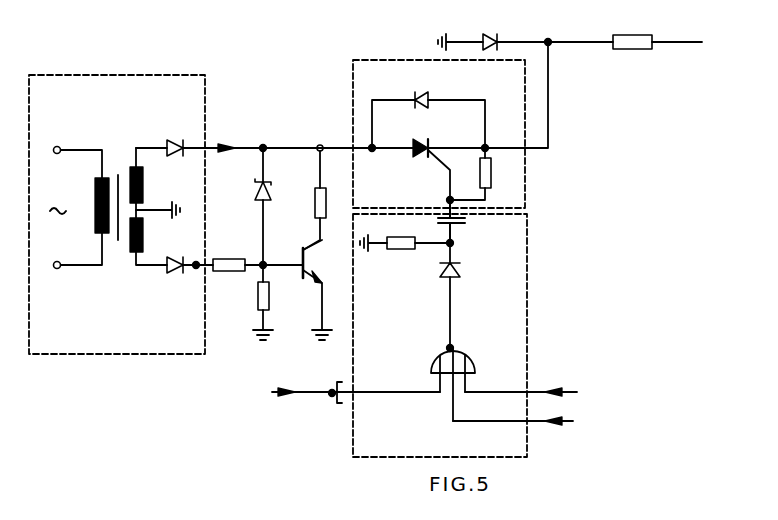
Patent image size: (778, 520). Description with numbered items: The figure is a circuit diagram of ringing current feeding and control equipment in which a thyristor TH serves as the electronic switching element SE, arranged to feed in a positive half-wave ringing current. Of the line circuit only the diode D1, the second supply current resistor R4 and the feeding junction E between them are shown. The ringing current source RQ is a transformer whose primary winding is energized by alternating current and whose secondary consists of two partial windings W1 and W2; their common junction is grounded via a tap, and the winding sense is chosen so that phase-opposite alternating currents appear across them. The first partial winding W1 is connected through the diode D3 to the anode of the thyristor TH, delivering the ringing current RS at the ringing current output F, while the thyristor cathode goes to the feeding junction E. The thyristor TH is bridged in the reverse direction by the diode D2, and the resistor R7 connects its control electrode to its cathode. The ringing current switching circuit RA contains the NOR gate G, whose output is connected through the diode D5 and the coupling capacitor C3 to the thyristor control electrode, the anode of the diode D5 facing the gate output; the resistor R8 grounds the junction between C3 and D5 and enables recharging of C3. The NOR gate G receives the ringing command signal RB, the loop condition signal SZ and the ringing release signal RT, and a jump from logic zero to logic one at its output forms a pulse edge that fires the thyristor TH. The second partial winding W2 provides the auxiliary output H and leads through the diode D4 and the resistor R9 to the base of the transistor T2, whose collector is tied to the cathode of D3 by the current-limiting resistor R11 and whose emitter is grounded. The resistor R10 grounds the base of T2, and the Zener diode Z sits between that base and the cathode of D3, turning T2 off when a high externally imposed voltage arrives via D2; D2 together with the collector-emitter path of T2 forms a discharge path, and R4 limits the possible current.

The ringing current source RQ is at (117, 227).
The first partial winding W1 is at (155, 183).
The second partial winding W2 is at (151, 241).
The diode D1 is at (493, 27).
The diode D2 is at (427, 108).
The diode D3 is at (177, 134).
The diode D4 is at (181, 278).
The diode D5 is at (467, 295).
The auxiliary output H is at (200, 253).
The ringing current RS is at (240, 136).
The ringing current output F is at (316, 135).
The Zener diode Z is at (253, 206).
The second supply current resistor R4 is at (625, 30).
The resistor R7 is at (483, 174).
The resistor R8 is at (405, 234).
The resistor R9 is at (258, 254).
The resistor R10 is at (247, 302).
The resistor R11 is at (304, 197).
The transistor T2 is at (324, 290).
The electronic switching element SE is at (439, 120).
The thyristor TH is at (428, 169).
The feeding junction E is at (519, 81).
The ringing current switching circuit RA is at (460, 335).
The coupling capacitor C3 is at (465, 223).
The NOR gate G is at (441, 383).
The ringing release signal RT is at (356, 384).
The signal SZ is at (521, 380).
The ringing command signal RB is at (513, 411).